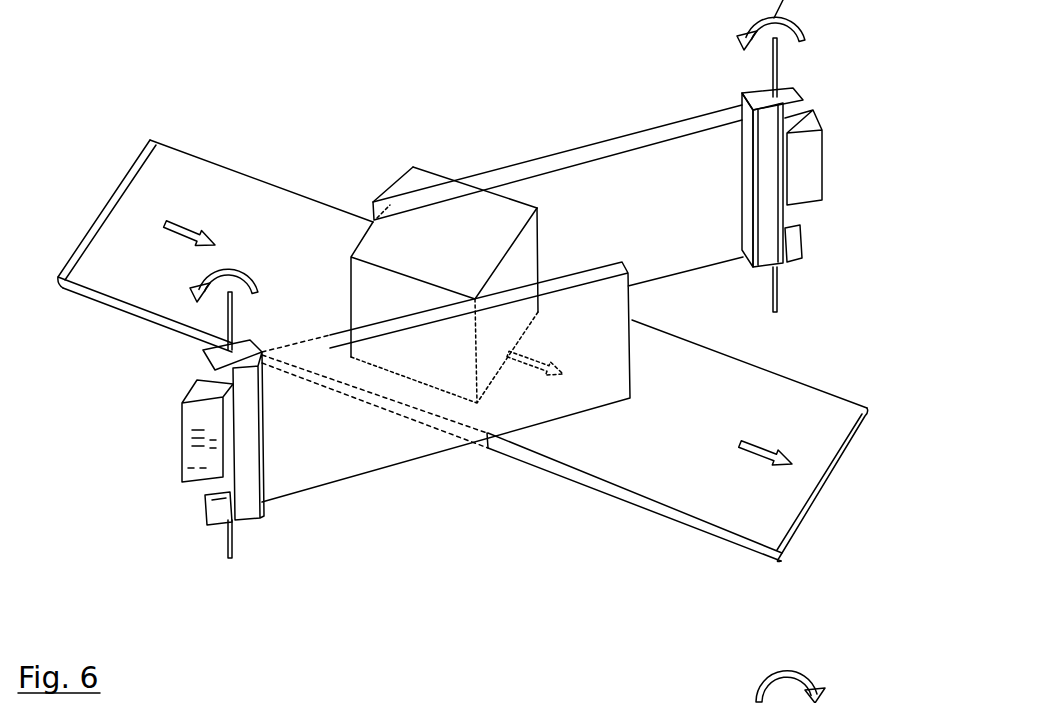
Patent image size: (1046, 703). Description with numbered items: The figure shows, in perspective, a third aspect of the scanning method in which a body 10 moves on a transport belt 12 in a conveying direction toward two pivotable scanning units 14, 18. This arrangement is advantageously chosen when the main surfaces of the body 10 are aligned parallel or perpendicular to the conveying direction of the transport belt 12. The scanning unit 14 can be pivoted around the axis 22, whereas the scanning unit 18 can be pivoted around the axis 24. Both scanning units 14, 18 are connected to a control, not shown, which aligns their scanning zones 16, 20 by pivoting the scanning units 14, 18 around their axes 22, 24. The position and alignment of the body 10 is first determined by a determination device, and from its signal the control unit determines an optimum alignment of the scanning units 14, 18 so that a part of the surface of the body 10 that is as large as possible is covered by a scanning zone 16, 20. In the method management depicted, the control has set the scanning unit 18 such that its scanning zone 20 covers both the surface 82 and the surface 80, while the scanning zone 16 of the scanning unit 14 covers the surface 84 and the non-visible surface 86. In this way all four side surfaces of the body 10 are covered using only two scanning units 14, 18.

The body 10 is at (440, 250).
The transport belt 12 is at (800, 390).
The scanning unit 14 is at (262, 467).
The scanning zone 16 is at (565, 380).
The scanning unit 18 is at (808, 165).
The scanning zone 20 is at (600, 190).
The axis 22 is at (227, 550).
The axis 24 is at (790, 700).
The surface 80 is at (438, 170).
The surface 82 is at (520, 262).
The surface 84 is at (393, 298).
The non-visible surface 86 is at (404, 170).